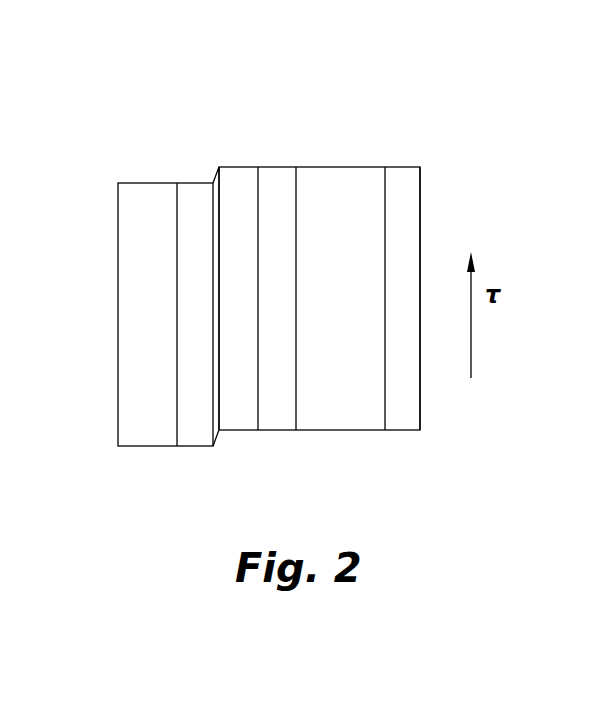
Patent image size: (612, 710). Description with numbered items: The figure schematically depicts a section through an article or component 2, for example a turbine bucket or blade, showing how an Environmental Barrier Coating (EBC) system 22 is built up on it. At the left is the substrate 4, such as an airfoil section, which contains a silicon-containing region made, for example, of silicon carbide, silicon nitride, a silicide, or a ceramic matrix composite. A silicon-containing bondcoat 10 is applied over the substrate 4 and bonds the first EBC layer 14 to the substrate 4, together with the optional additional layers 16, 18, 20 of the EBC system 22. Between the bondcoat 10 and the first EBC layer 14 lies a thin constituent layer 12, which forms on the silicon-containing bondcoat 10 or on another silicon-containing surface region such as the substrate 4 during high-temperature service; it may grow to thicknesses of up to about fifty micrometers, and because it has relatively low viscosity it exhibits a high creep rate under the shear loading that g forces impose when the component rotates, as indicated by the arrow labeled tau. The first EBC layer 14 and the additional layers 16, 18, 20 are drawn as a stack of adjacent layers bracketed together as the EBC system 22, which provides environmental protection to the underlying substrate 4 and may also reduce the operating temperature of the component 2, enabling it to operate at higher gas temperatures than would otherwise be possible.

The article or component 2 is at (93, 110).
The substrate 4 is at (127, 217).
The bondcoat 10 is at (197, 208).
The constituent layer 12 is at (212, 183).
The first EBC layer 14 is at (247, 172).
The additional layer 16 is at (285, 175).
The additional layer 18 is at (352, 177).
The additional layer 20 is at (410, 187).
The Environmental Barrier Coating (EBC) system 22 is at (420, 450).